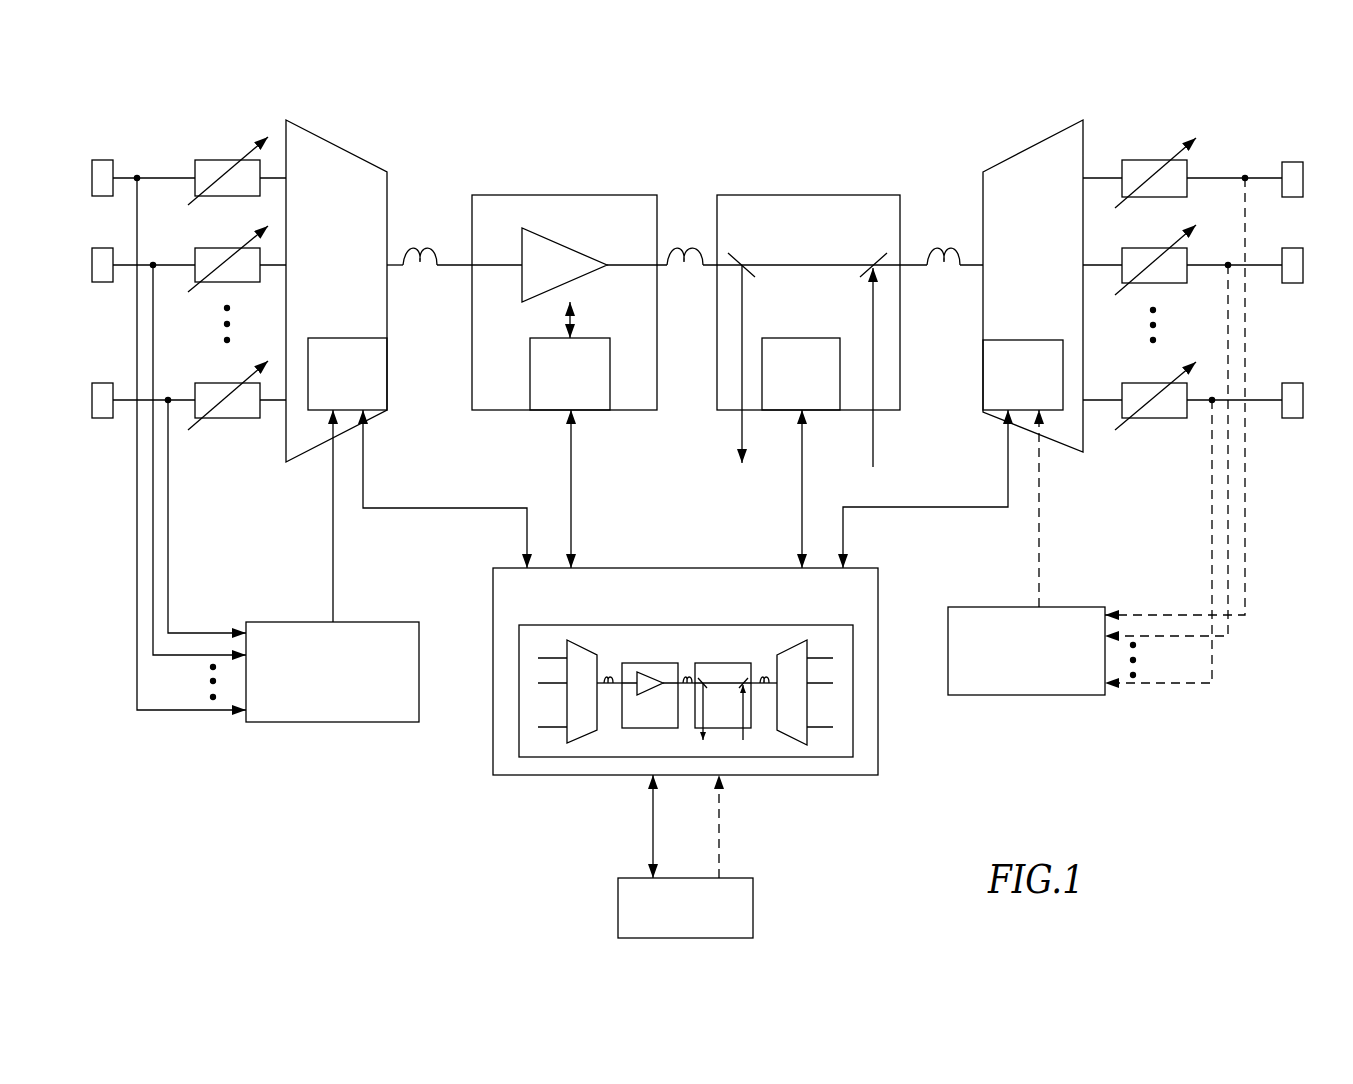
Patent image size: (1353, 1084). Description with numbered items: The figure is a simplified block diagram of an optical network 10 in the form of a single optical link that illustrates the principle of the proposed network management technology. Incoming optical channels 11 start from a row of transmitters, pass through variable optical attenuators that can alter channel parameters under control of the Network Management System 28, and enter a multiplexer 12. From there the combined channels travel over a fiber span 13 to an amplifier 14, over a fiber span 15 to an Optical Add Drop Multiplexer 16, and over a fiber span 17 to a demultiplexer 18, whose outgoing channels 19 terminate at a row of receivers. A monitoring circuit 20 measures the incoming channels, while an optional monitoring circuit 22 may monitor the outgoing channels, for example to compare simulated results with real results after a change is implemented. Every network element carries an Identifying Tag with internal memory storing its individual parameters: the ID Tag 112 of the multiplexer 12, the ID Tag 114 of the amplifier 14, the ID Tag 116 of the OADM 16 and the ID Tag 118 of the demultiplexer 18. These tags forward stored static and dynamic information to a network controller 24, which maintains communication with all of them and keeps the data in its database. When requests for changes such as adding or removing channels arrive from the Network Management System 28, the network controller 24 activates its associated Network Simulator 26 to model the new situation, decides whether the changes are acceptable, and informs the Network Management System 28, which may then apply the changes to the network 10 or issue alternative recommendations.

The optical network 10 is at (1182, 786).
The incoming optical channels 11 is at (168, 110).
The multiplexer (MUX) 12 is at (338, 143).
The fiber span 13 is at (405, 268).
The amplifier 14 is at (556, 195).
The fiber span 15 is at (668, 268).
The Optical Add Drop Multiplexer (OADM) 16 is at (783, 195).
The fiber span 17 is at (928, 268).
The demultiplexer (DMUX) 18 is at (1048, 135).
The outgoing optical channels 19 is at (1224, 104).
The monitoring circuit 20 is at (323, 722).
The monitoring circuit 22 is at (1030, 695).
The network controller (NC) 24 is at (662, 568).
The Network Simulator (NS) 26 is at (612, 757).
The Network Management System (NMS) 28 is at (618, 910).
The ID Tag of the MUX 112 is at (393, 372).
The ID Tag of the amplifier 114 is at (610, 375).
The ID Tag of the OADM 116 is at (842, 372).
The ID Tag of the DMUX 118 is at (983, 375).